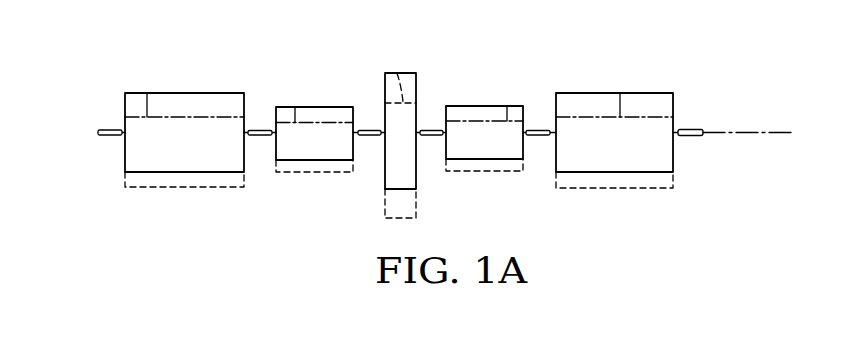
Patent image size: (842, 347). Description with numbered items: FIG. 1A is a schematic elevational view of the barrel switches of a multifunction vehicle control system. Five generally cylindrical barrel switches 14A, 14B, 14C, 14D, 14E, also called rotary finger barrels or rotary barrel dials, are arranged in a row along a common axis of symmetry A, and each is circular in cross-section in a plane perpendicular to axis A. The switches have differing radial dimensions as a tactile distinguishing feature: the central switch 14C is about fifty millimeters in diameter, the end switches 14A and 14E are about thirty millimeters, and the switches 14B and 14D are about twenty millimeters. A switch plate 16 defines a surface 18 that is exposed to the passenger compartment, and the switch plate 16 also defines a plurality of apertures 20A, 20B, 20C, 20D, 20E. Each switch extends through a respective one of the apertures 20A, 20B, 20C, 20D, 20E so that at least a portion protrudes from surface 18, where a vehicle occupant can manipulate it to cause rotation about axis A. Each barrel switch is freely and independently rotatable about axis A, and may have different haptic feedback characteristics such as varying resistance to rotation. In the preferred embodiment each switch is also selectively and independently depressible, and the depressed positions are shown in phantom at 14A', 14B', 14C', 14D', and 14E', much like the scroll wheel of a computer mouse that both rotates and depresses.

The switch plate 16 is at (110, 130).
The barrel switch 14A is at (184, 104).
The depressed position of barrel switch 14A' is at (127, 73).
The aperture 20A is at (126, 133).
The barrel switch 14B is at (316, 104).
The depressed position of barrel switch 14B' is at (264, 93).
The aperture 20B is at (277, 133).
The barrel switch 14C is at (418, 103).
The depressed position of barrel switch 14C' is at (384, 59).
The aperture 20C is at (385, 133).
The barrel switch 14D is at (484, 105).
The depressed position of barrel switch 14D' is at (526, 69).
The aperture 20D is at (446, 133).
The barrel switch 14E is at (613, 104).
The depressed position of barrel switch 14E' is at (636, 67).
The aperture 20E is at (556, 133).
The surface 18 is at (693, 129).
The axis of symmetry A is at (747, 130).